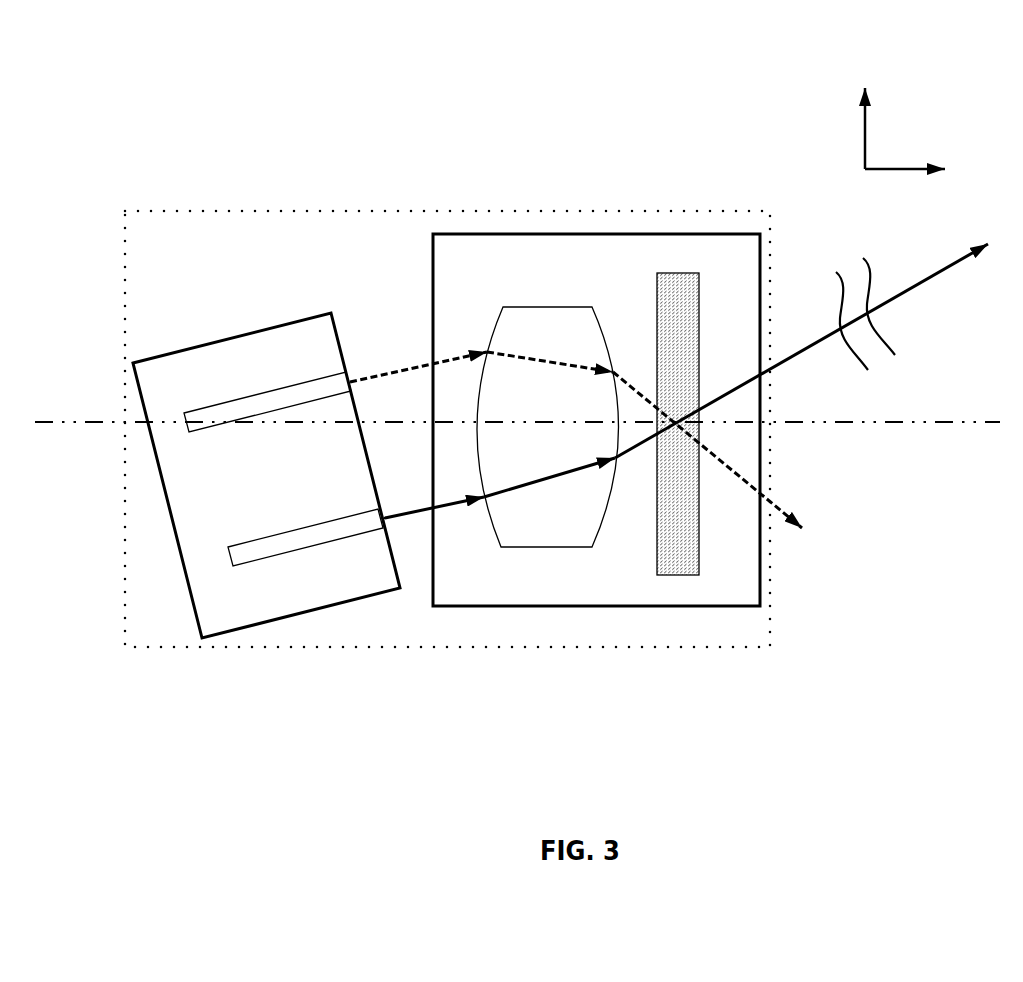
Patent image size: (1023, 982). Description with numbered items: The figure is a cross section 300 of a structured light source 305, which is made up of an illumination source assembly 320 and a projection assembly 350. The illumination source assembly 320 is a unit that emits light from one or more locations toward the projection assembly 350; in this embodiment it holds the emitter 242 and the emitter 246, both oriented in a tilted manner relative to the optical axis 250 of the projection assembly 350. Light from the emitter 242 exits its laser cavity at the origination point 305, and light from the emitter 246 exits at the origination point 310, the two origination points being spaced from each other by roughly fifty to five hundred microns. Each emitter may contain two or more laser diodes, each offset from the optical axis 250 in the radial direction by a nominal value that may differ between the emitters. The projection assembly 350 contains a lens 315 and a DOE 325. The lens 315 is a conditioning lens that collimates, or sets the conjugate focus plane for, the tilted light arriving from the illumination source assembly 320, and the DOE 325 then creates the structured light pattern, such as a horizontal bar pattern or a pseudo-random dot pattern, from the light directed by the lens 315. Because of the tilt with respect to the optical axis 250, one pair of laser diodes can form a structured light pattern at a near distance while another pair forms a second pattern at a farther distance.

The cross section 300 is at (512, 407).
The structured light source 305 is at (350, 382).
The emitter 242 is at (213, 415).
The emitter 246 is at (260, 548).
The illumination source assembly 320 is at (218, 638).
The origination point 310 is at (385, 518).
The projection assembly 350 is at (508, 233).
The lens 315 is at (552, 530).
The diffractive optical element (DOE) 325 is at (687, 577).
The optical axis 250 is at (795, 428).